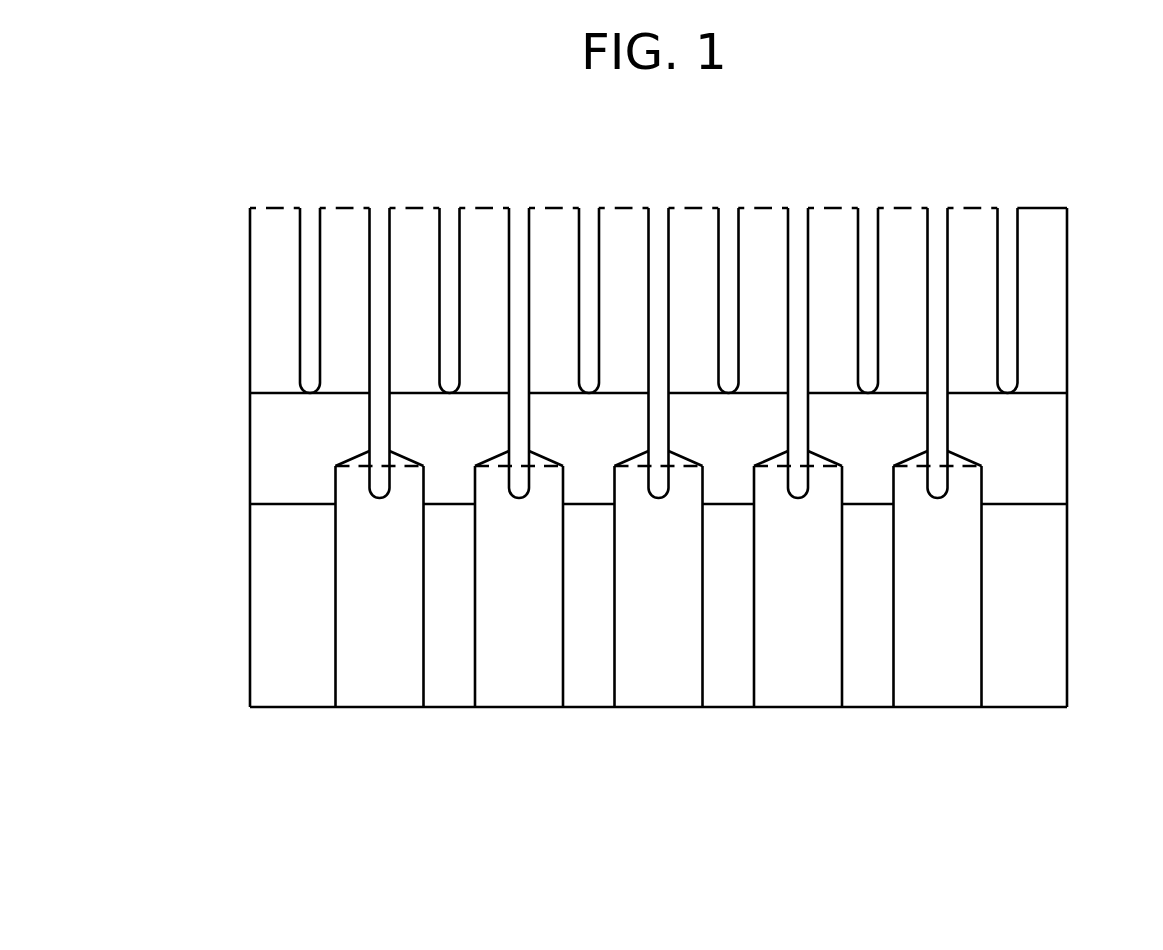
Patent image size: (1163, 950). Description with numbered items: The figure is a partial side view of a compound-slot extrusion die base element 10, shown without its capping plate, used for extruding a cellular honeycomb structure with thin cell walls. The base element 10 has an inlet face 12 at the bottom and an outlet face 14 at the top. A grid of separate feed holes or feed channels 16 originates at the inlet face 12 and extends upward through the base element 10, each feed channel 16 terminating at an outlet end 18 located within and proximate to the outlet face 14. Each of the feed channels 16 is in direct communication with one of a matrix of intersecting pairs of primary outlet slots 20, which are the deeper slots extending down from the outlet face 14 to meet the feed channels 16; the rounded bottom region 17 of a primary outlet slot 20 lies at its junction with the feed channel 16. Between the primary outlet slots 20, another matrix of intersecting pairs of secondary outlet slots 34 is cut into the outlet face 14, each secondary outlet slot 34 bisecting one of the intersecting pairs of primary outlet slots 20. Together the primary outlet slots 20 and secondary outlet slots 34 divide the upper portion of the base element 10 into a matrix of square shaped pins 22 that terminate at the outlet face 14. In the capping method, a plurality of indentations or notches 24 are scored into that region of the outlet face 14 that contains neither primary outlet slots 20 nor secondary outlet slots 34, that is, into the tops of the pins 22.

The compound-slot extrusion die base element 10 is at (192, 459).
The inlet face 12 is at (450, 720).
The outlet face 14 is at (1048, 195).
The feed channels 16 is at (795, 688).
The deep trench bottom 17 is at (382, 498).
The outlet end 18 is at (826, 435).
The primary outlet slots 20 is at (378, 275).
The pins 22 is at (270, 303).
The notches 24 is at (690, 195).
The secondary outlet slots 34 is at (450, 198).